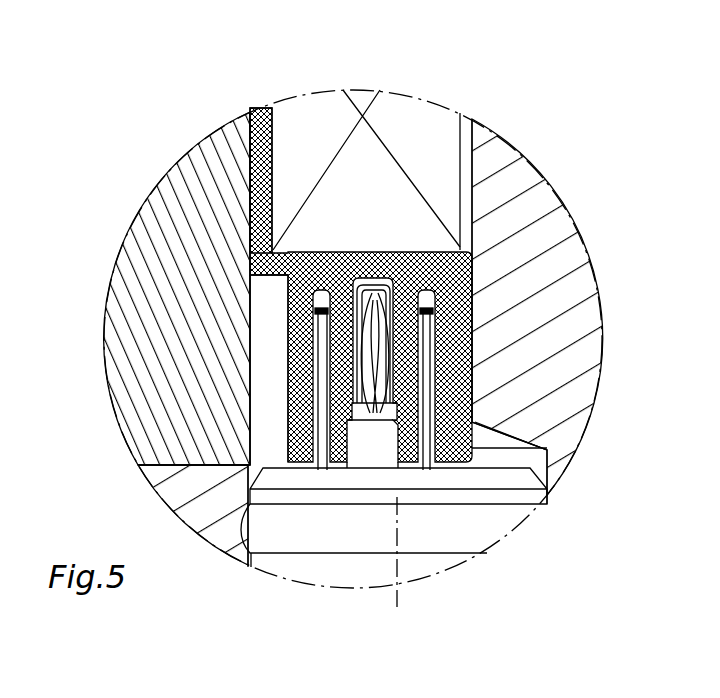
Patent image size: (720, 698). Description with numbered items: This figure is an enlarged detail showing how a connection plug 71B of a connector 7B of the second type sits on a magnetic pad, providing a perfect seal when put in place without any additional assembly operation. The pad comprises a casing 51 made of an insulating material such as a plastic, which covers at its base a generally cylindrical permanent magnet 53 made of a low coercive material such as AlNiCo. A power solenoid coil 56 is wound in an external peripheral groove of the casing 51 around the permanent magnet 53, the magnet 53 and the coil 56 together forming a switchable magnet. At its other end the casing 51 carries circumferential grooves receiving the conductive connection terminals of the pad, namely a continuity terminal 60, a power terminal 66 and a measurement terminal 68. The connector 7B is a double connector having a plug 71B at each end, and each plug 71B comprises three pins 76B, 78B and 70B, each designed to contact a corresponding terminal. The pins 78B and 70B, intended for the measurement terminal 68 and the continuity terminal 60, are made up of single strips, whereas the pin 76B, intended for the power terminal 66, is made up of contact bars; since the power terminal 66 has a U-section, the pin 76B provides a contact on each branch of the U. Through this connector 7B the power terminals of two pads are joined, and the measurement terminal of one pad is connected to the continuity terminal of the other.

The connector of the second type 7B is at (277, 565).
The casing 51 is at (247, 112).
The permanent magnet 53 is at (167, 378).
The power solenoid coil 56 is at (307, 150).
The continuity terminal 60 is at (283, 288).
The power terminal 66 is at (375, 285).
The measurement terminal 68 is at (462, 250).
The pin 70B is at (328, 455).
The plug 71B is at (508, 513).
The pin 76B is at (370, 450).
The pin 78B is at (427, 420).